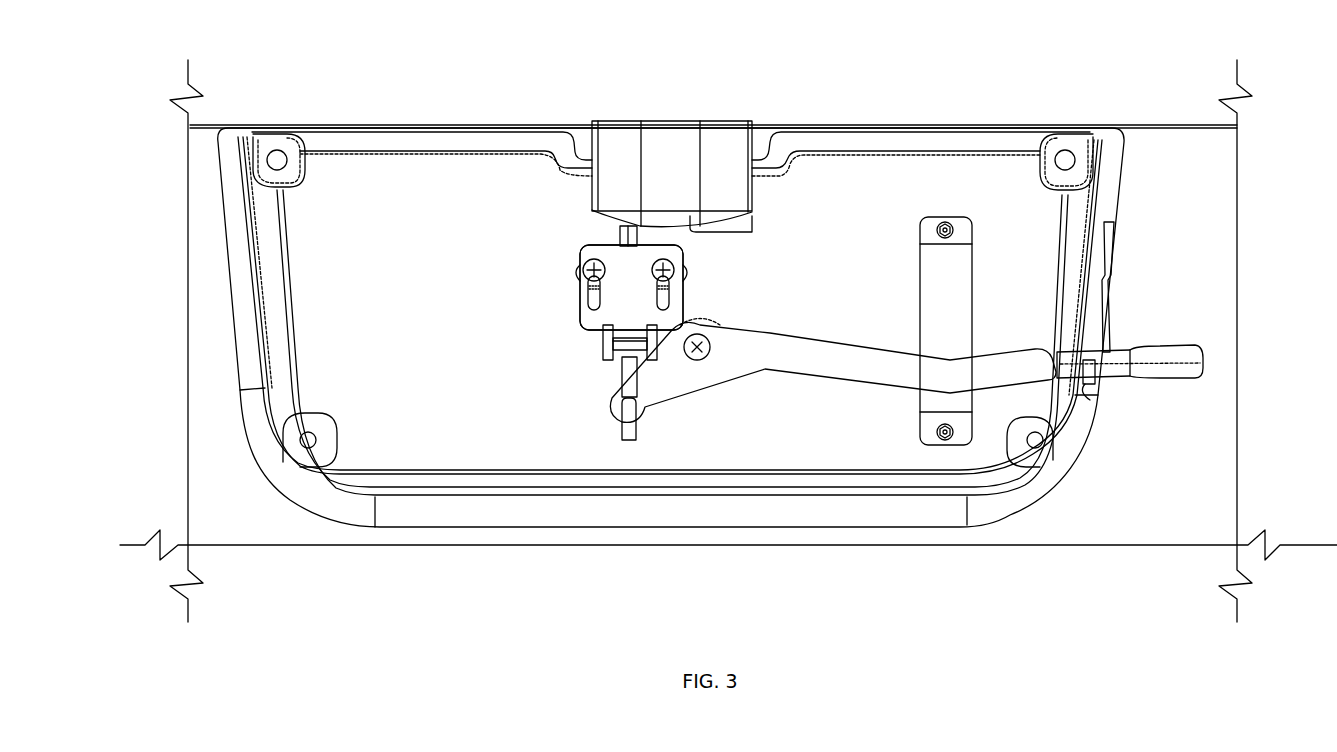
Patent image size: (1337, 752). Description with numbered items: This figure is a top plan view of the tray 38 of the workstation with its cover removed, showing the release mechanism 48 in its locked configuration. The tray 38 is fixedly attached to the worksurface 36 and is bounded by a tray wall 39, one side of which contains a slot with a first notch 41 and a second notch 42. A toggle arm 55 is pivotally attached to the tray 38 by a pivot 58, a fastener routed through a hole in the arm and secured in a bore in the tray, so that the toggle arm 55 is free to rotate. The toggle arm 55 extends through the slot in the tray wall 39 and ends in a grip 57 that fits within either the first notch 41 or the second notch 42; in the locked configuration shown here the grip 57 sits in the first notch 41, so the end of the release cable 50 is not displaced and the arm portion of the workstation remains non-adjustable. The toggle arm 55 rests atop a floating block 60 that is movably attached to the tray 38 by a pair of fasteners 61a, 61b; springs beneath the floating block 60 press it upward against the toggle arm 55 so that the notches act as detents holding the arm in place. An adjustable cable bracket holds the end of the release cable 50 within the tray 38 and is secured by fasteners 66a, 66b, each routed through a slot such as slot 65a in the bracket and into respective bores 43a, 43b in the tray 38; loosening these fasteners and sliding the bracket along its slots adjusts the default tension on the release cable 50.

The worksurface 36 is at (197, 218).
The tray 38 is at (420, 182).
The tray wall 39 is at (1108, 202).
The first notch 41 is at (1095, 388).
The second notch 42 is at (1108, 250).
The bore 43a is at (582, 271).
The bore 43b is at (676, 272).
The release mechanism 48 is at (849, 92).
The release cable 50 is at (620, 420).
The toggle arm 55 is at (832, 355).
The grip 57 is at (1194, 352).
The pivot 58 is at (702, 360).
The floating block 60 is at (950, 292).
The fastener 61a is at (951, 226).
The fastener 61b is at (940, 432).
The slot 65a is at (594, 306).
The fastener 66a is at (592, 258).
The fastener 66b is at (672, 258).